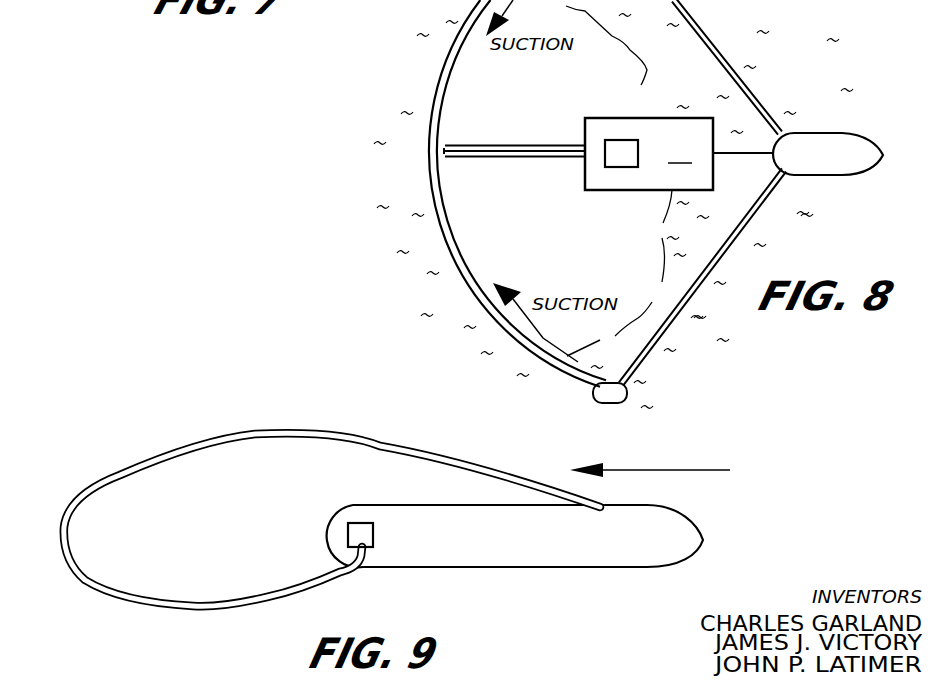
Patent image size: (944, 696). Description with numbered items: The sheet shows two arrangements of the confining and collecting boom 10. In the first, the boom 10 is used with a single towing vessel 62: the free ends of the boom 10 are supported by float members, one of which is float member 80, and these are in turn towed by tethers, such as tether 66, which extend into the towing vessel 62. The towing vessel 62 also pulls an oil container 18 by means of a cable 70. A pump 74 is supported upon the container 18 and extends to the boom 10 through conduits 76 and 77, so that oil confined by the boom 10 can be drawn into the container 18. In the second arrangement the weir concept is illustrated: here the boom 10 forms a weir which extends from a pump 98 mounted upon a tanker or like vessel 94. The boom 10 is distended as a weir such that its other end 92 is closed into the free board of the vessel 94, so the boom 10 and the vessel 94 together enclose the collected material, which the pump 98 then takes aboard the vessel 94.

In FIG. 8, the boom 10 is at (448, 60).
In FIG. 9, the boom 10 is at (292, 435).
In FIG. 8, the oil container 18 is at (649, 154).
In FIG. 8, the towing vessel 62 is at (803, 141).
In FIG. 8, the tether 66 is at (746, 222).
In FIG. 8, the cable 70 is at (727, 158).
In FIG. 8, the pump 74 is at (630, 143).
In FIG. 8, the conduit 76 is at (466, 150).
In FIG. 8, the conduit 77 is at (541, 146).
In FIG. 8, the float member 80 is at (604, 403).
In FIG. 9, the other end of the boom 92 is at (606, 506).
In FIG. 9, the tanker or like vessel 94 is at (552, 553).
In FIG. 9, the pump 98 is at (375, 536).